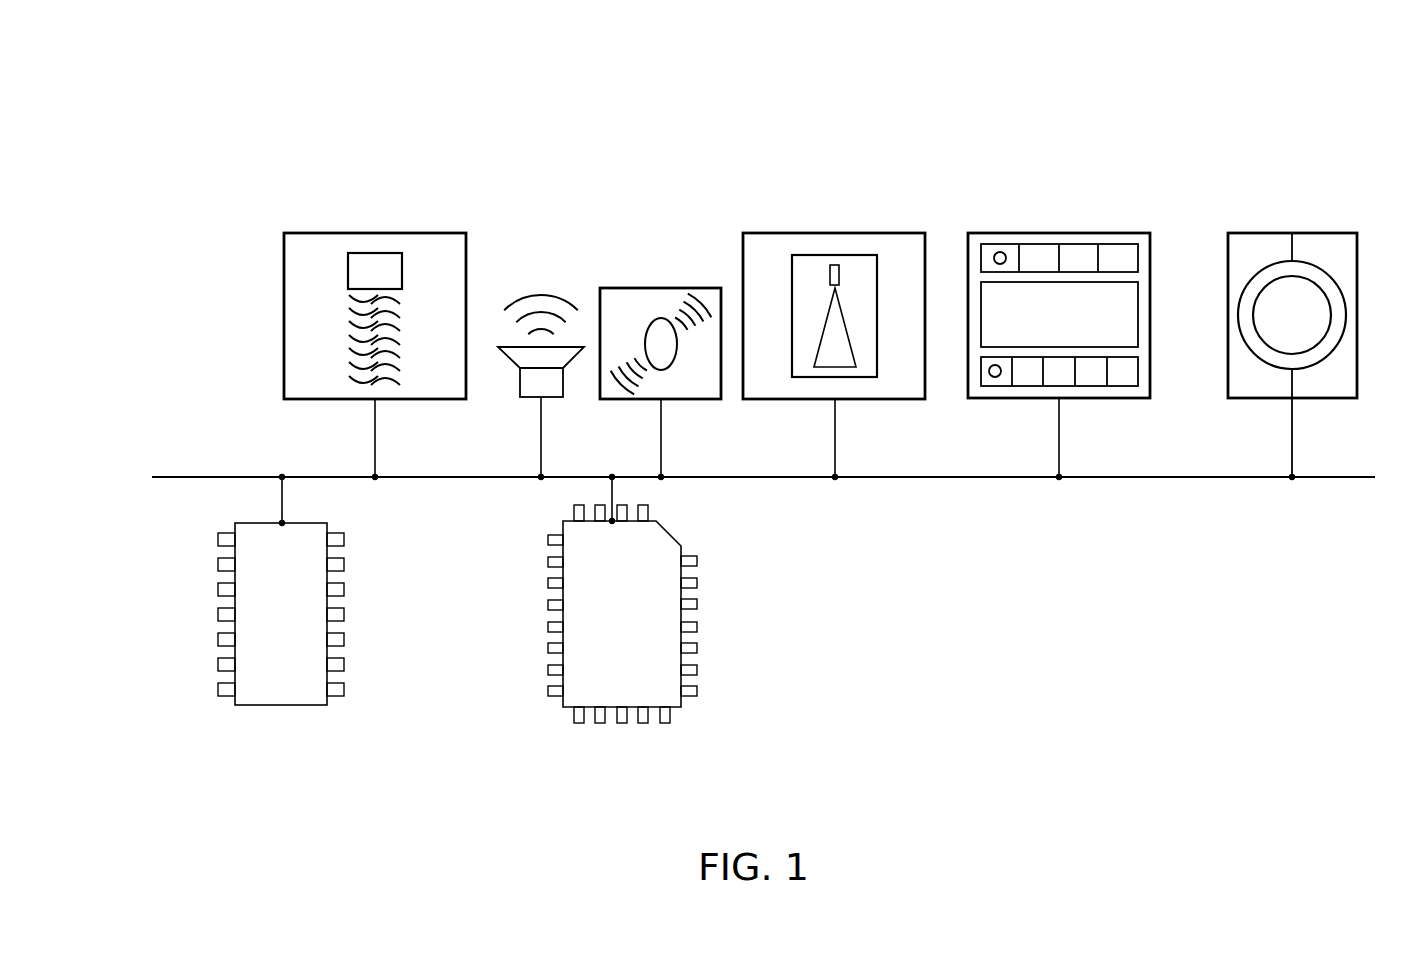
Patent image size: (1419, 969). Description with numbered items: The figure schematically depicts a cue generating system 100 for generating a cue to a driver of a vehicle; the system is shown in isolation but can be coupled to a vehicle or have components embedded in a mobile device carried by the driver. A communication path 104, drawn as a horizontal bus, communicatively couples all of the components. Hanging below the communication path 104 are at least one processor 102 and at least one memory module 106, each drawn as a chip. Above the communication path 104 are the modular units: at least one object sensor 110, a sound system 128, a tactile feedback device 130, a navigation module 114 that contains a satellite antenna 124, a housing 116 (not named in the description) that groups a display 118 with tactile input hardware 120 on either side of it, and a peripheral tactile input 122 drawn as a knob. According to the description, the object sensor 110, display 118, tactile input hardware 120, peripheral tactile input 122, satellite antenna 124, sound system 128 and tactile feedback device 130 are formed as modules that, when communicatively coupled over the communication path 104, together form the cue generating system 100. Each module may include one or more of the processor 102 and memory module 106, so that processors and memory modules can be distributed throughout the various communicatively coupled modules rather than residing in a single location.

The cue generating system 100 is at (1021, 138).
The processor 102 is at (568, 707).
The communication path 104 is at (190, 477).
The memory module 106 is at (282, 705).
The object sensor 110 is at (377, 233).
The navigation module 114 is at (834, 330).
The control panel 116 is at (1086, 356).
The display 118 is at (1130, 313).
The tactile input hardware 120 is at (1130, 259).
The peripheral tactile input 122 is at (1320, 233).
The satellite antenna 124 is at (850, 255).
The sound system 128 is at (528, 397).
The tactile feedback device 130 is at (660, 288).